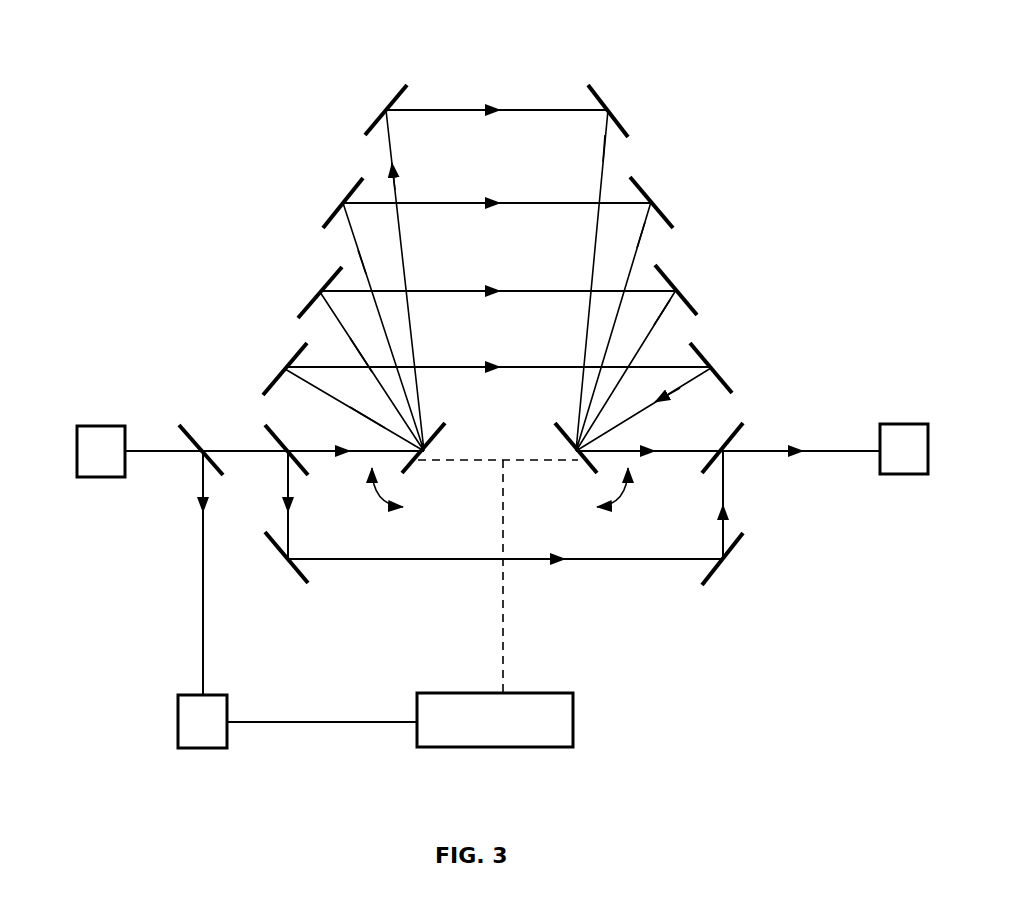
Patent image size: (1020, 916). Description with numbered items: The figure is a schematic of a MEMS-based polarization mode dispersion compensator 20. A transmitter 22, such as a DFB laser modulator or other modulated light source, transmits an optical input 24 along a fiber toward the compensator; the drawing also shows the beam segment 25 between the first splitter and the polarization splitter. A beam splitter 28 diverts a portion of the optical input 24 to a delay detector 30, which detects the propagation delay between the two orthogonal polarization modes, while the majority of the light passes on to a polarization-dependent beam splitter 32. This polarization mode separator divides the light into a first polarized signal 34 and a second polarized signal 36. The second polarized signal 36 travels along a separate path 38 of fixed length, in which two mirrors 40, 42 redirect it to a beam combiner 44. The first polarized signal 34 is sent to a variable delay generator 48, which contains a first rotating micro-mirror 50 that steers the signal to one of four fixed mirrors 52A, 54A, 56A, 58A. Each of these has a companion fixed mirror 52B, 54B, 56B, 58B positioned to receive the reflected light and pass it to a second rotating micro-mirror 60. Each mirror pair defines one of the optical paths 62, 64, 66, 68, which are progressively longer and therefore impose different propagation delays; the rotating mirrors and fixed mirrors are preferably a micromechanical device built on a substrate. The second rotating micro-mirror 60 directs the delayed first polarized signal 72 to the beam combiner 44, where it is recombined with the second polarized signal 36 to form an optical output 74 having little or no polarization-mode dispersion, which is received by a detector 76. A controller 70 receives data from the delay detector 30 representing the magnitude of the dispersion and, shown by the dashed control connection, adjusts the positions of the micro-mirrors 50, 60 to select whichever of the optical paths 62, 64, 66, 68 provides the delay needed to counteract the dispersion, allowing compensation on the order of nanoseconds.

The polarization mode dispersion compensator 20 is at (803, 173).
The transmitter 22 is at (95, 432).
The optical input 24 is at (138, 453).
The split beam portion 25 is at (177, 453).
The beam splitter 28 is at (192, 423).
The delay detector 30 is at (189, 735).
The polarization-dependent beam splitter 32 is at (273, 437).
The first polarized signal 34 is at (317, 450).
The second polarized signal 36 is at (288, 487).
The path 38 is at (563, 577).
The mirror 40 is at (293, 570).
The mirror 42 is at (722, 565).
The beam combiner 44 is at (730, 440).
The variable delay generator 48 is at (548, 77).
The first rotating micro-mirror 50 is at (418, 462).
The fixed mirror 52A is at (287, 365).
The companion fixed mirror 52B is at (715, 370).
The fixed mirror 54A is at (317, 290).
The companion fixed mirror 54B is at (683, 295).
The fixed mirror 56A is at (337, 210).
The companion fixed mirror 56B is at (658, 207).
The fixed mirror 58A is at (377, 120).
The companion fixed mirror 58B is at (620, 122).
The second rotating micro-mirror 60 is at (577, 462).
The optical path 62 is at (535, 368).
The optical path 64 is at (535, 292).
The optical path 66 is at (535, 205).
The optical path 68 is at (540, 112).
The controller 70 is at (481, 735).
The delayed first polarized signal 72 is at (683, 450).
The optical output 74 is at (822, 450).
The detector 76 is at (910, 467).